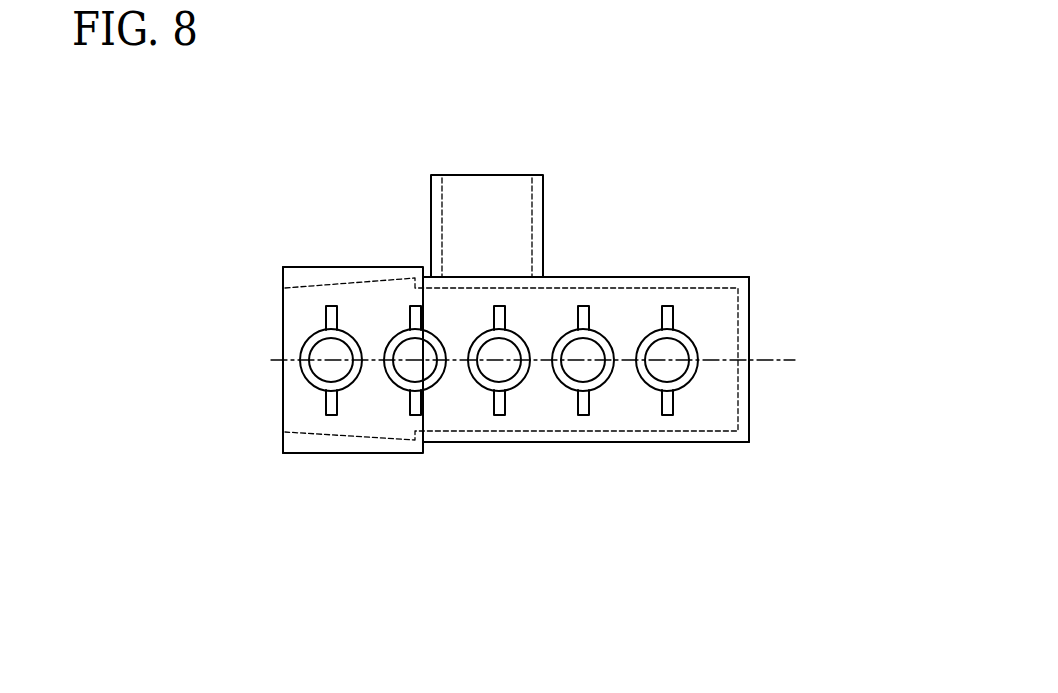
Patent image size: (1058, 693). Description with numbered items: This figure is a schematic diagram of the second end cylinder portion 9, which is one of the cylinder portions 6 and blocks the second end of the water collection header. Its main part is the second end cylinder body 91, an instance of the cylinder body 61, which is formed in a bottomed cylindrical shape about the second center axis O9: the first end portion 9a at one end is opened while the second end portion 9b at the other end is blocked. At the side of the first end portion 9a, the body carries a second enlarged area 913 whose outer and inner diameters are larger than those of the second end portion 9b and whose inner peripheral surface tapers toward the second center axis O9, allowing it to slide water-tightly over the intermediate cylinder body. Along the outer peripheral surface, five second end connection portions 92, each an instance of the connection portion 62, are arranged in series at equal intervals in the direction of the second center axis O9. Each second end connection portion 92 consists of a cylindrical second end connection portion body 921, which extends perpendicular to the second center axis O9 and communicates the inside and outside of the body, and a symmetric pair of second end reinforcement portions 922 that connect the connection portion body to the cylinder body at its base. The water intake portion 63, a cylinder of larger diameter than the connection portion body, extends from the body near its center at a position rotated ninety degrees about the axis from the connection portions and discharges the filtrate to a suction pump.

The second end cylinder portion 9 is at (521, 344).
The cylinder portion 6 is at (763, 153).
The second end cylinder body 91 is at (506, 328).
The cylinder body 61 is at (727, 276).
The second enlarged area 913 is at (294, 268).
The first end portion 9a is at (283, 332).
The second end portion 9b is at (749, 312).
The water intake portion 63 is at (495, 192).
The second center axis O9 is at (779, 360).
The second end connection portion 92 is at (494, 385).
The connection portion 62 is at (308, 379).
The second end connection portion body 921 is at (317, 335).
The second end reinforcement portion 922 is at (335, 315).